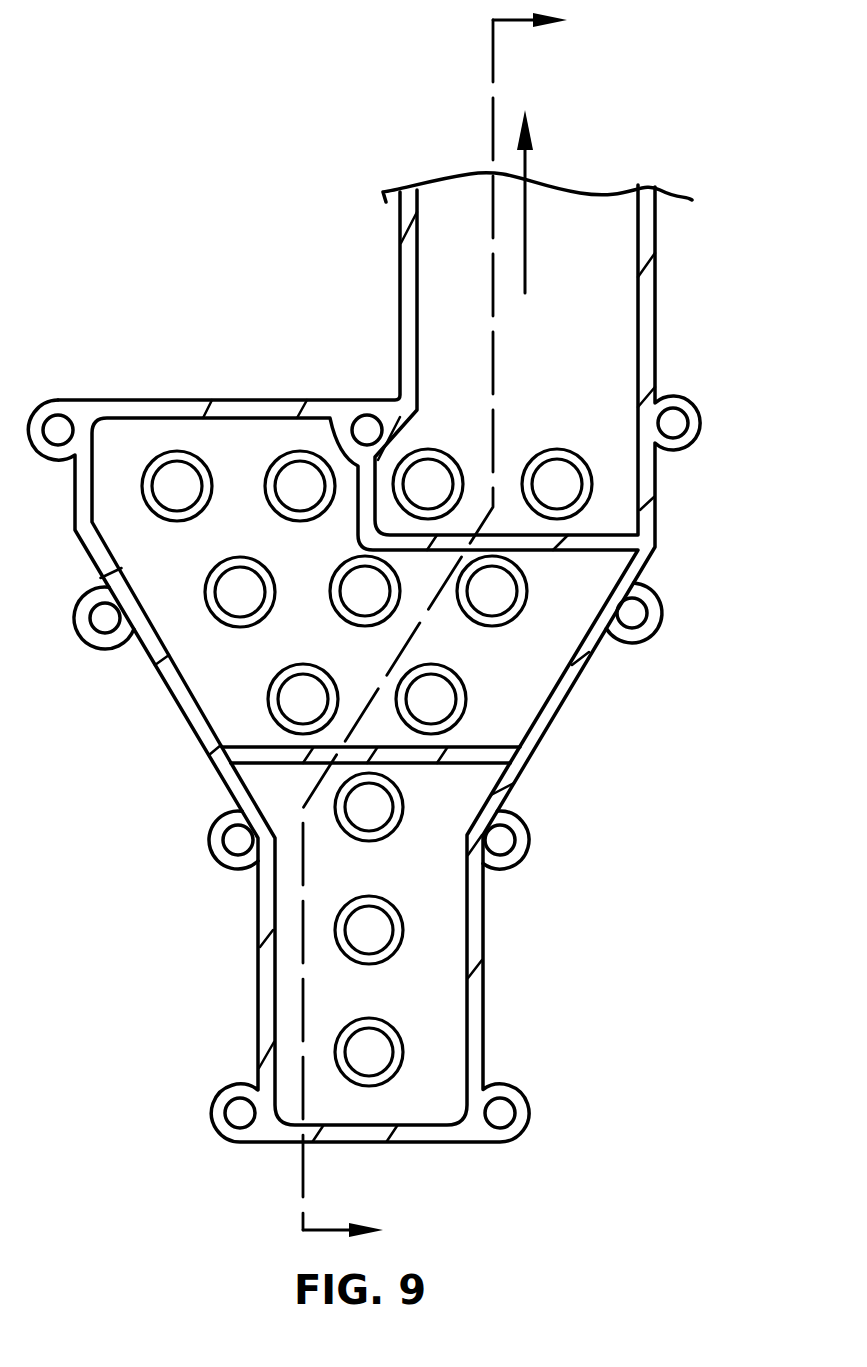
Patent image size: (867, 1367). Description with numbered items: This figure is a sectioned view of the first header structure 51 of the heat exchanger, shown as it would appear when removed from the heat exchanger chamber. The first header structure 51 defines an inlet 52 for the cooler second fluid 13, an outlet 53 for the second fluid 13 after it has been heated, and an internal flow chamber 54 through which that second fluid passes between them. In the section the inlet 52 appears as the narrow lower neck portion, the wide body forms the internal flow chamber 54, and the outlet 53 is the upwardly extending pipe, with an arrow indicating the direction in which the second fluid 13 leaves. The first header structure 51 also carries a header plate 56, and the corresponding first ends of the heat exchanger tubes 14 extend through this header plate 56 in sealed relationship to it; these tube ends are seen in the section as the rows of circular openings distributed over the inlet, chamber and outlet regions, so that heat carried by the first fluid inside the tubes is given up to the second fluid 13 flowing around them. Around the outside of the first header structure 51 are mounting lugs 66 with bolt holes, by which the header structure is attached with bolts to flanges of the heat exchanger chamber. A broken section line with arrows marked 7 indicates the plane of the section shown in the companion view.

The section line 7- 7 is at (457, 627).
The cooler second fluid 13 is at (527, 167).
The heat exchanger tubes 14 is at (400, 828).
The first header structure 51 is at (182, 730).
The inlet 52 is at (443, 997).
The outlet 53 is at (592, 411).
The internal flow chamber 54 is at (517, 653).
The header plate 56 is at (288, 969).
The mounting lugs 66 is at (242, 868).